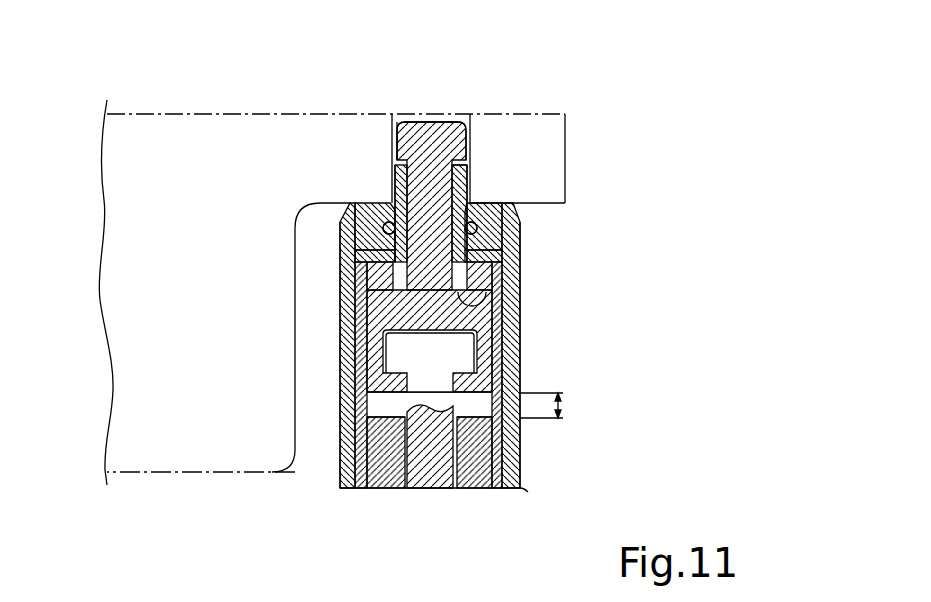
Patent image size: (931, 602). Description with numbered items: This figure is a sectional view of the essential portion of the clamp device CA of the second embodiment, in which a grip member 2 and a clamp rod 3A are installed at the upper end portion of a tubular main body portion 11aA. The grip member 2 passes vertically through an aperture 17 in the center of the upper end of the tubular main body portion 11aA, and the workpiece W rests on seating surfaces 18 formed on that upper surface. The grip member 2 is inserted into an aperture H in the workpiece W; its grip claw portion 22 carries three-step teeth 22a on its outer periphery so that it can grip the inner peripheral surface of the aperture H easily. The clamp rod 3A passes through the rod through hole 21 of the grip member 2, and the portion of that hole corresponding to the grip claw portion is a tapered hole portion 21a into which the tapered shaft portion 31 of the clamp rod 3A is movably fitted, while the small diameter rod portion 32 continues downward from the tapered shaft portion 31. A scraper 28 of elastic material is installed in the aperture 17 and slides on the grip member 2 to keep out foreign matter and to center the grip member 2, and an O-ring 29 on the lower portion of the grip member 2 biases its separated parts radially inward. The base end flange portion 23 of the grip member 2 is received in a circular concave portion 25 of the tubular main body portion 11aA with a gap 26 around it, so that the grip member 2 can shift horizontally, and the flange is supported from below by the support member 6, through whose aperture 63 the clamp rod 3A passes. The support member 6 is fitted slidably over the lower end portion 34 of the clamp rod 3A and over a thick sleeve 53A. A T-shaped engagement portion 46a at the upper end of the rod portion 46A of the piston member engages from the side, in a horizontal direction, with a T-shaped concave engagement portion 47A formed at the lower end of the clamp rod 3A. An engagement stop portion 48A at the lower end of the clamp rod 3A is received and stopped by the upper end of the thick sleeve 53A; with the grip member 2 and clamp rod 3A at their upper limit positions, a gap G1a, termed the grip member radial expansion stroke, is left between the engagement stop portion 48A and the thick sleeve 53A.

The grip member 2 is at (474, 140).
The clamp rod 3A is at (446, 112).
The tapered shaft portion 31 is at (428, 120).
The tapered hole portion 21a is at (411, 122).
The teeth 22a is at (395, 145).
The rod through hole 21 is at (468, 190).
The grip claw portion 22 is at (468, 157).
The seating surfaces 18 is at (393, 178).
The scraper 28 is at (390, 203).
The O-ring 29 is at (335, 213).
The gap 26 is at (340, 245).
The aperture 17 is at (340, 258).
The base end flange portion 23 is at (520, 222).
The circular concave portion 25 is at (505, 250).
The aperture 63 is at (515, 282).
The small diameter rod portion 32 is at (355, 292).
The lower end portion 34 is at (385, 318).
The T-shaped engagement portion 46a is at (463, 357).
The T-shaped concave engagement portion 47A is at (372, 368).
The engagement stop portion 48A is at (380, 417).
The thick sleeve 53A is at (378, 455).
The rod portion 46A is at (432, 466).
The support member 6 is at (508, 462).
The tubular main body portion 11aA is at (523, 317).
The gap G1a is at (569, 404).
The aperture H is at (393, 140).
The workpiece W is at (165, 472).
The clamp device CA is at (645, 178).